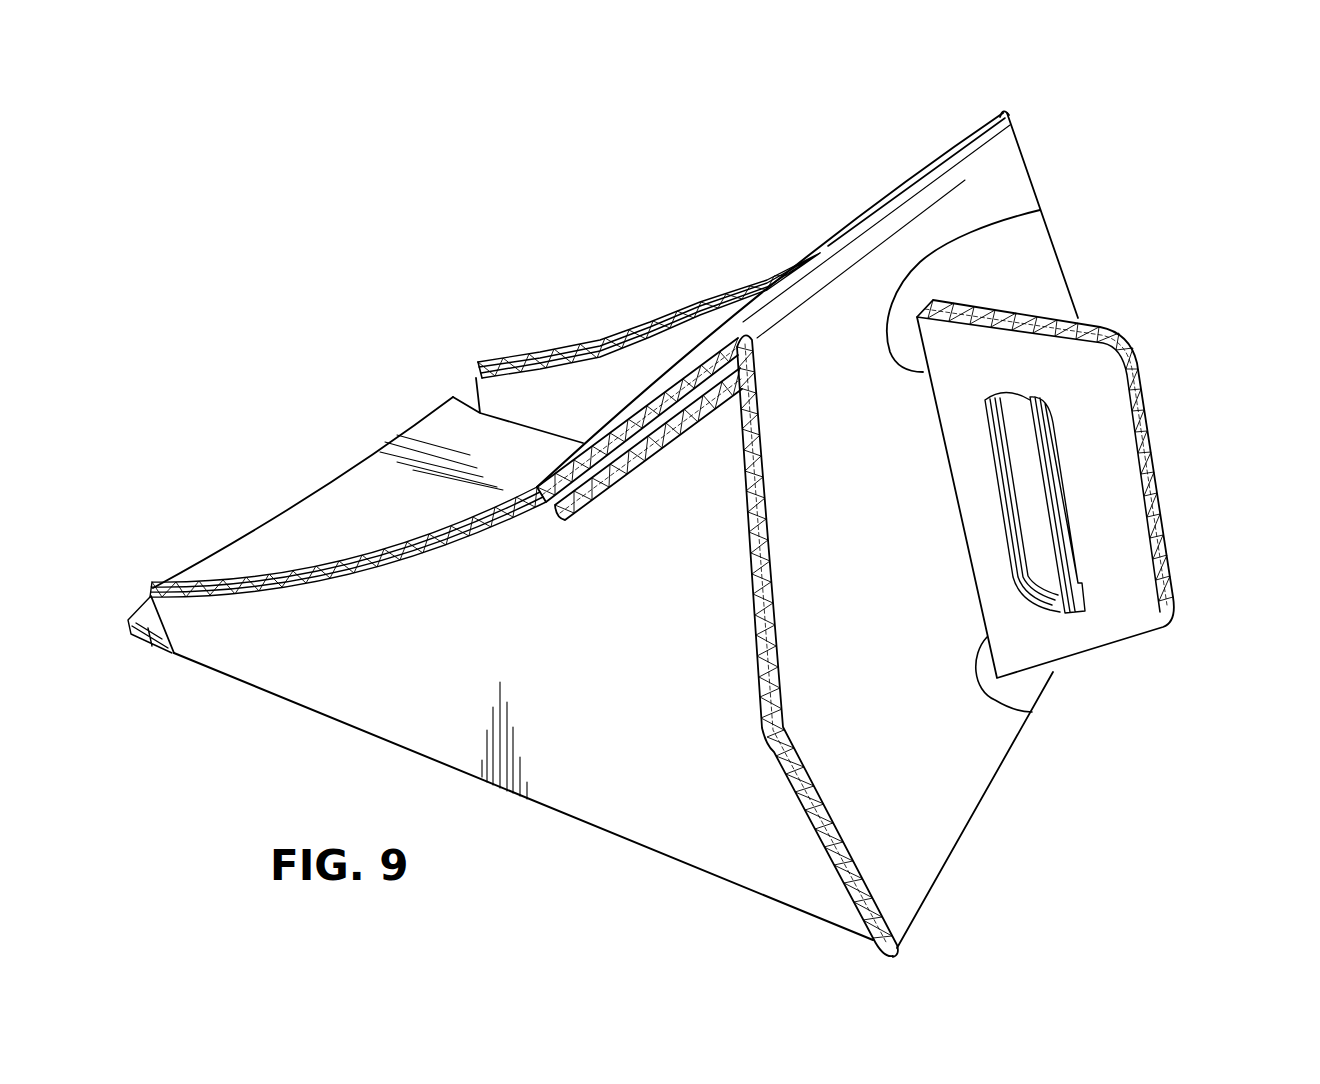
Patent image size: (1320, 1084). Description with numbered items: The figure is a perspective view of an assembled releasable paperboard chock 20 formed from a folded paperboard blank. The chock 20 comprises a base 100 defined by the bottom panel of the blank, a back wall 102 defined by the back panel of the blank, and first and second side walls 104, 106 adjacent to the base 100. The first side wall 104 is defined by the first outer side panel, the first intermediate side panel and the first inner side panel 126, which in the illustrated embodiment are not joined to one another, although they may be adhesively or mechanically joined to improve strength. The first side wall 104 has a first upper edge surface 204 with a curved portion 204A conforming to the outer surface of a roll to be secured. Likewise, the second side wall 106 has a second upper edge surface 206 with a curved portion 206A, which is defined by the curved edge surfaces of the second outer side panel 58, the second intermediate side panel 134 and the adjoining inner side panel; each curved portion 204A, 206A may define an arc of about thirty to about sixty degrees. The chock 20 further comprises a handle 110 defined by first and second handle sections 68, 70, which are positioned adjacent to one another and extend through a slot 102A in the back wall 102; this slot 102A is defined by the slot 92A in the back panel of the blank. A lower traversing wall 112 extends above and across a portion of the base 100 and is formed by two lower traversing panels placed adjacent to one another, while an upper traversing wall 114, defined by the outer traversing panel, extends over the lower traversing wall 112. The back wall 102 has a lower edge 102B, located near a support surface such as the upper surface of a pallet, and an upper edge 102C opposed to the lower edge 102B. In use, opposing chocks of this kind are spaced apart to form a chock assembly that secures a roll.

The paperboard chock 20 is at (722, 256).
The second outer side panel 58 is at (700, 840).
The first handle section 68 is at (1158, 477).
The second handle section 70 is at (1147, 648).
The slot in the back panel 92A is at (1040, 210).
The base 100 is at (345, 493).
The back wall 102 is at (963, 773).
The slot in the back wall 102A is at (1032, 712).
The lower edge 102B is at (947, 863).
The upper edge 102C is at (1005, 108).
The first side wall 104 is at (522, 356).
The second side wall 106 is at (567, 815).
The handle 110 is at (1140, 360).
The lower traversing wall 112 is at (605, 445).
The upper traversing wall 114 is at (598, 510).
The first inner side panel 126 is at (600, 377).
The second intermediate side panel 134 is at (462, 737).
The first upper edge surface 204 is at (498, 358).
The curved portion 204A is at (670, 324).
The second upper edge surface 206 is at (216, 578).
The curved portion 206A is at (252, 578).